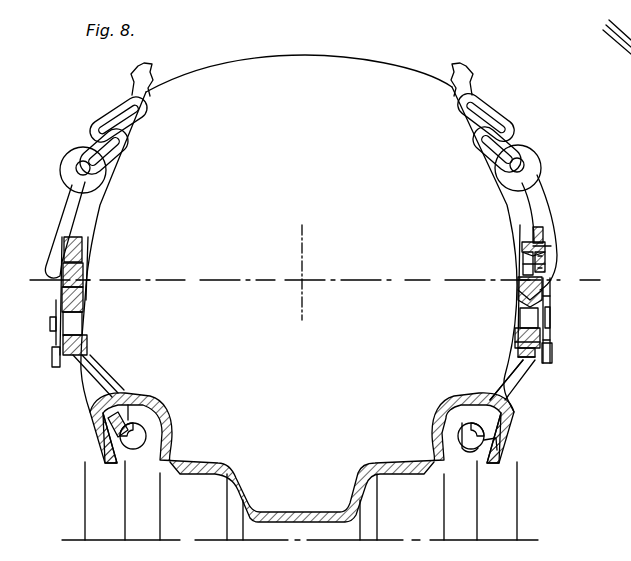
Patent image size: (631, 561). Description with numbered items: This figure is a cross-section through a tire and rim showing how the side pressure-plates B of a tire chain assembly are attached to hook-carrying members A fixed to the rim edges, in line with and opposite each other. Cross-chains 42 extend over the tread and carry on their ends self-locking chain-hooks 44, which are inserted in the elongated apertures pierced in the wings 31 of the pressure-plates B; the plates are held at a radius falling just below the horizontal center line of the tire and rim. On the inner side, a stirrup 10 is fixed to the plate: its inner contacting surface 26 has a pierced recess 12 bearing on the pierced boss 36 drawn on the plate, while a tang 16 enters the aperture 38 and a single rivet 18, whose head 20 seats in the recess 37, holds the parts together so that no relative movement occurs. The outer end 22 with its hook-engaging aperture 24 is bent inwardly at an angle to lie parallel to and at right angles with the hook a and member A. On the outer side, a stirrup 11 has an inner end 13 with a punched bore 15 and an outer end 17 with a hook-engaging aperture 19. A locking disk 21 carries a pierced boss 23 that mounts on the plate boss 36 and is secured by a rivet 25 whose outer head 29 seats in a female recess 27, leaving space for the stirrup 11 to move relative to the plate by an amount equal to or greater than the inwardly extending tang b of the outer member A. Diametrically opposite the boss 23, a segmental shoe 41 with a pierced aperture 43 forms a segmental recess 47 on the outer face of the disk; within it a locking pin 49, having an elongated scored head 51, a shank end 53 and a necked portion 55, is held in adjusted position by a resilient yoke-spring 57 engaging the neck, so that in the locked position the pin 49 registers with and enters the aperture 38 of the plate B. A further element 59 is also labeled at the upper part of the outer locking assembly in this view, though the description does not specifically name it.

The stirrup 10 is at (96, 372).
The stirrup 11 is at (522, 358).
The pierced recess 12 is at (62, 300).
The inner end 13 is at (533, 227).
The punched bore 15 is at (530, 358).
The tang 16 is at (84, 268).
The outer end 17 is at (490, 430).
The rivet 18 is at (58, 347).
The hook-engaging aperture 19 is at (508, 388).
The head 20 is at (86, 320).
The locking disk 21 is at (545, 290).
The outer end 22 is at (112, 432).
The pierced boss 23 is at (550, 296).
The hook-engaging aperture 24 is at (98, 390).
The rivet 25 is at (520, 350).
The inner contacting surface 26 is at (84, 290).
The female recess 27 is at (550, 340).
The outer head 29 is at (546, 318).
The wings 31 is at (555, 358).
The pierced boss 36 is at (84, 305).
The recess 37 is at (86, 333).
The aperture 38 is at (82, 258).
The segmental shoe 41 is at (520, 253).
The cross-chains 42 is at (136, 90).
The pierced aperture 43 is at (520, 280).
The chain-hook 44 is at (58, 225).
The segmental recess 47 is at (545, 255).
The locking pin 49 is at (545, 262).
The elongated scored head 51 is at (545, 272).
The shank end 53 is at (522, 268).
The necked portion 55 is at (526, 276).
The yoke-spring 57 is at (522, 292).
The bolt head 59 is at (545, 235).
The hook-carrying members A is at (166, 407).
The side pressure-plates B is at (86, 280).
The hook a is at (105, 455).
The inwardly extending tang b is at (496, 462).